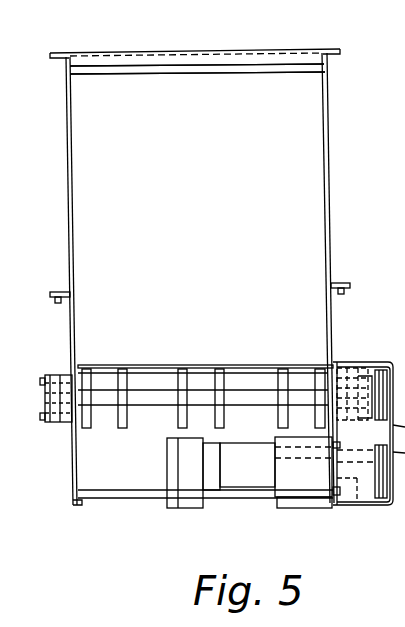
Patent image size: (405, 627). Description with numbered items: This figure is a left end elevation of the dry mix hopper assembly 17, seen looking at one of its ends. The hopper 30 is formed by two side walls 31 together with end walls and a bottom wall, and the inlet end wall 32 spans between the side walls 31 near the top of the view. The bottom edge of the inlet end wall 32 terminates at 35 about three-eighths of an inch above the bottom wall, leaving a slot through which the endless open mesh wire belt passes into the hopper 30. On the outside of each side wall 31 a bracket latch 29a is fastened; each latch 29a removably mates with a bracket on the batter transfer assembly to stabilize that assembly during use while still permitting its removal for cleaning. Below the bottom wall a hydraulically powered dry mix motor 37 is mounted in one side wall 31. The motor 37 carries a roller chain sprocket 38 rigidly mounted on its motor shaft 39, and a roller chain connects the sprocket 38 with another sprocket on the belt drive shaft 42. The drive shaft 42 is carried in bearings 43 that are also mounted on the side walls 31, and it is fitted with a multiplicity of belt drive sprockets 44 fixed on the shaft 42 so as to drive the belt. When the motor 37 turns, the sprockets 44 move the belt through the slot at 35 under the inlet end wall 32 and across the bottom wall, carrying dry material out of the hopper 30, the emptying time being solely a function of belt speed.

The hopper assembly 17 is at (155, 45).
The hopper 30 is at (204, 40).
The inlet end wall 32 is at (274, 78).
The side walls 31 is at (68, 185).
The bracket latch 29a is at (62, 292).
The bottom edge termination of inlet end wall 35 is at (240, 370).
The belt drive shaft 42 is at (302, 392).
The belt drive sprockets 44 is at (282, 377).
The bearings 43 is at (347, 375).
The dry mix motor 37 is at (300, 502).
The roller chain sprocket 38 is at (377, 505).
The motor shaft 39 is at (353, 503).